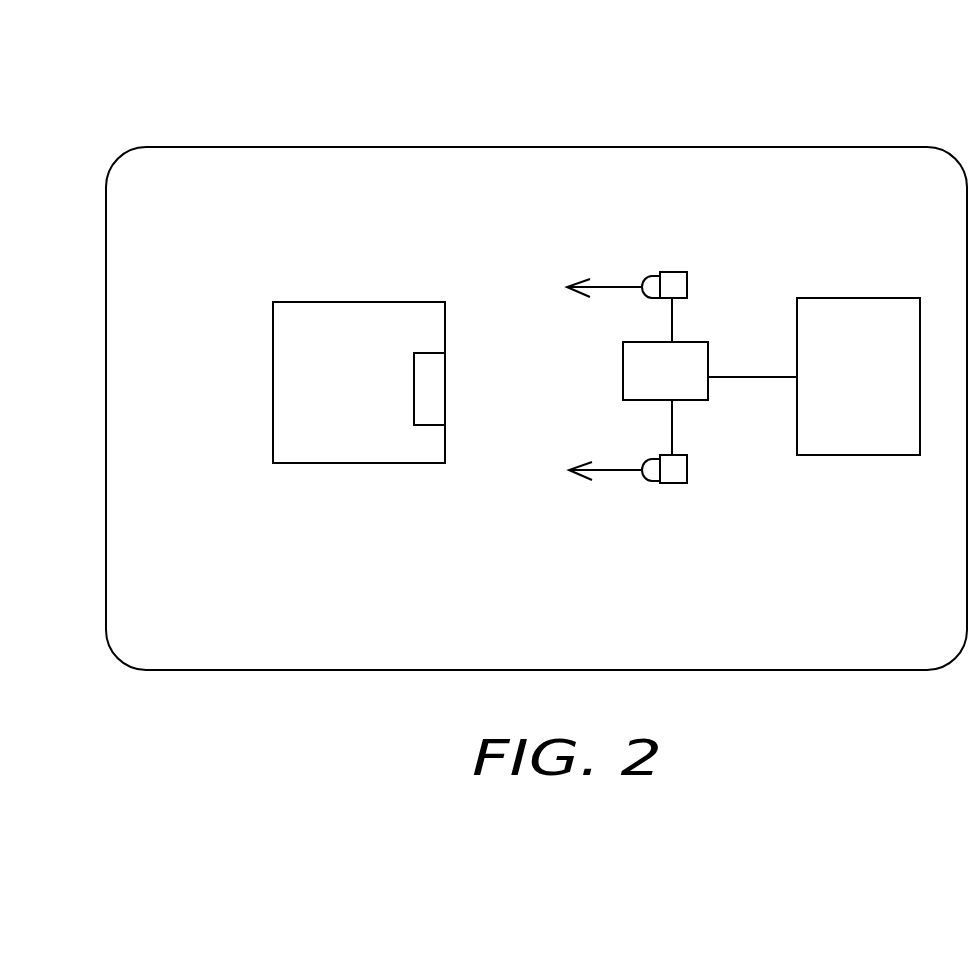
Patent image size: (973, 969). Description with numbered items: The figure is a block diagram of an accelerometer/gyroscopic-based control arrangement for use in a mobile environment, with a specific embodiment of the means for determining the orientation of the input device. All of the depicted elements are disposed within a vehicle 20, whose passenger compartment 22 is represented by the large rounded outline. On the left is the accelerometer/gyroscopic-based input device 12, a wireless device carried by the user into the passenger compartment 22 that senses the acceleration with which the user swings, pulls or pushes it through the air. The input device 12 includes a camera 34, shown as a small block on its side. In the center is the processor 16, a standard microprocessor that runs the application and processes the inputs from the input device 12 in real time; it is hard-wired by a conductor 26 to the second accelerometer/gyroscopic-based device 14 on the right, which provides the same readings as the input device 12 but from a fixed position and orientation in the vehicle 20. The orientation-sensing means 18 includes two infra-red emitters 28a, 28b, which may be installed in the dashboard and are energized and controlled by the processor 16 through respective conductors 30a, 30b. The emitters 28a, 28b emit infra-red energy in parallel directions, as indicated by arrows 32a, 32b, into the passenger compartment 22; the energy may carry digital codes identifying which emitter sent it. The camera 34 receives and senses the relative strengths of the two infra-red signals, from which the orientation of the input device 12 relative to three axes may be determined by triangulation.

The accelerometer/gyroscopic-based input device 12 is at (333, 302).
The second accelerometer/gyroscopic-based device 14 is at (853, 298).
The processor 16 is at (700, 400).
The orientation-sensing means 18 is at (710, 150).
The vehicle 20 is at (294, 147).
The passenger compartment 22 is at (440, 622).
The conductor 26 is at (748, 377).
The infra-red emitter 28a is at (675, 272).
The infra-red emitter 28b is at (670, 483).
The conductor 30a is at (672, 318).
The conductor 30b is at (672, 430).
The arrow 32a is at (612, 287).
The arrow 32b is at (620, 470).
The camera 34 is at (437, 370).